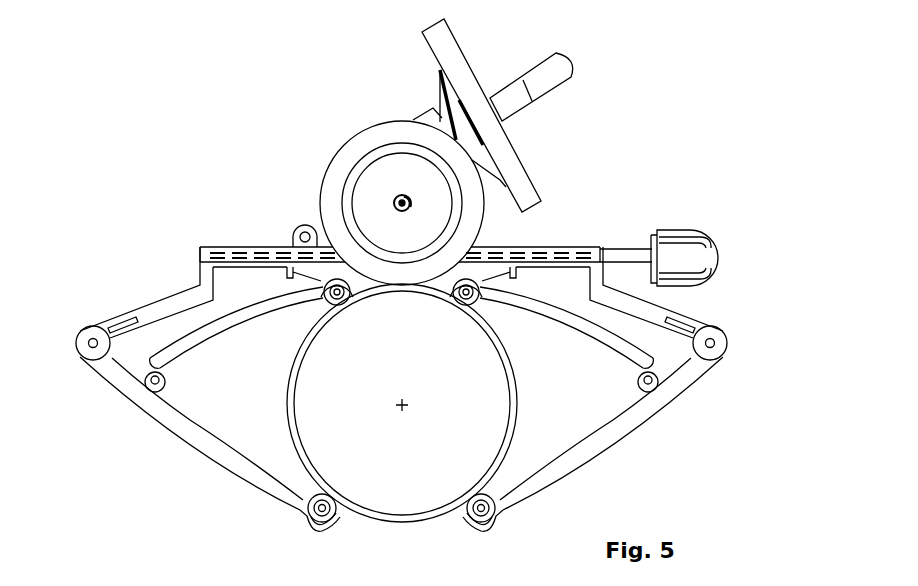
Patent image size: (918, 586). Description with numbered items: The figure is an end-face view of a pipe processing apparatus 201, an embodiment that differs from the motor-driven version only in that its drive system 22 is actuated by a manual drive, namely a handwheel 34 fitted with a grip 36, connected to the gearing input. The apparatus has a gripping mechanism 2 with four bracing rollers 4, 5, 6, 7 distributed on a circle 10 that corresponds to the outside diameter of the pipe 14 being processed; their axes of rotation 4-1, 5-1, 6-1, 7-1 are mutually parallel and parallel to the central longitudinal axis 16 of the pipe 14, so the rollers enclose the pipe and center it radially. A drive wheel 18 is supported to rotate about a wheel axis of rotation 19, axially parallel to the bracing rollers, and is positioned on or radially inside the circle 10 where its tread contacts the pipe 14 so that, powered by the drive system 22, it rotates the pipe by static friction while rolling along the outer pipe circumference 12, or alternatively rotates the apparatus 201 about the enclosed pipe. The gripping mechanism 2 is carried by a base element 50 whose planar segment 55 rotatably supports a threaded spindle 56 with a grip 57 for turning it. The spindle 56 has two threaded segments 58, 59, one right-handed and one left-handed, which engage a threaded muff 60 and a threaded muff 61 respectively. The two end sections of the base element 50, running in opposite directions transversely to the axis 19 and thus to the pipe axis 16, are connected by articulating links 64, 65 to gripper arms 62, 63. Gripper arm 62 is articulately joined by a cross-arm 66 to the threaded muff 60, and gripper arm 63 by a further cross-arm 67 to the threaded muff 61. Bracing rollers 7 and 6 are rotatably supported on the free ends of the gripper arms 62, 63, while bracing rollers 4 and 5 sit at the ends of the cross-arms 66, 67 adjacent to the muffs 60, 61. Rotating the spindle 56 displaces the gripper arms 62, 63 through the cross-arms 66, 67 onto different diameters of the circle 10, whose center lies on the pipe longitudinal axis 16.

The gripping mechanism 2 is at (697, 451).
The bracing roller 4 is at (326, 298).
The axis of rotation 4-1 is at (340, 298).
The bracing roller 5 is at (478, 298).
The axis of rotation 5-1 is at (461, 298).
The bracing roller 6 is at (471, 521).
The axis of rotation 6-1 is at (487, 511).
The bracing roller 7 is at (336, 521).
The axis of rotation 7-1 is at (316, 511).
The circle 10 is at (428, 403).
The outer pipe circumference 12 is at (516, 401).
The pipe 14 is at (512, 373).
The central longitudinal axis 16 is at (404, 408).
The drive wheel 18 is at (352, 157).
The wheel axis of rotation 19 is at (399, 198).
The drive system 22 is at (413, 79).
The handwheel 34 is at (448, 47).
The grip 36 is at (560, 73).
The base element 50 is at (184, 293).
The planar segment 55 is at (230, 246).
The threaded spindle 56 is at (561, 251).
The grip 57 is at (674, 237).
The threaded segment 58 is at (260, 253).
The threaded segment 59 is at (516, 251).
The threaded muff 60 is at (284, 270).
The threaded muff 61 is at (519, 270).
The gripper arm 62 is at (210, 453).
The gripper arm 63 is at (608, 437).
The articulating link 64 is at (92, 346).
The articulating link 65 is at (712, 347).
The cross-arm 66 is at (223, 324).
The cross-arm 67 is at (589, 329).
The pipe processing apparatus 201 is at (722, 111).